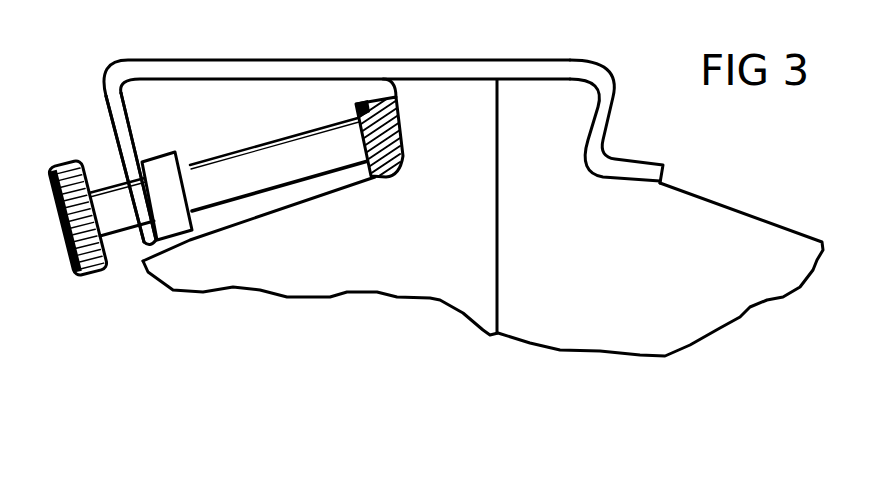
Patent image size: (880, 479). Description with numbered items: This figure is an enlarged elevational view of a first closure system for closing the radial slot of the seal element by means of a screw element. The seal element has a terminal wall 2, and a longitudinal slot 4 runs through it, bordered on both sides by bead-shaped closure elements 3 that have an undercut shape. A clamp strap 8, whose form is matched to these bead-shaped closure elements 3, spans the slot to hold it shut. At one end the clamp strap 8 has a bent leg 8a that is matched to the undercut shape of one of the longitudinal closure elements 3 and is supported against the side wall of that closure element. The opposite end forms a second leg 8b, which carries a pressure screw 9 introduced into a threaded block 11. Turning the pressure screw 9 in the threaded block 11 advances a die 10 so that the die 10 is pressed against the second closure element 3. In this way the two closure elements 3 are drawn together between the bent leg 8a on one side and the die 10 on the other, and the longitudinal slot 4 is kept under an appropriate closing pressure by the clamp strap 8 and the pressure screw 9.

The terminal wall 2 is at (483, 269).
The bead-shaped closure elements 3 is at (347, 138).
The longitudinal slot 4 is at (465, 206).
The clamp strap 8 is at (337, 55).
The bent leg 8a is at (616, 121).
The second leg 8b is at (147, 169).
The pressure screw 9 is at (208, 197).
The die 10 is at (372, 116).
The threaded block 11 is at (136, 167).